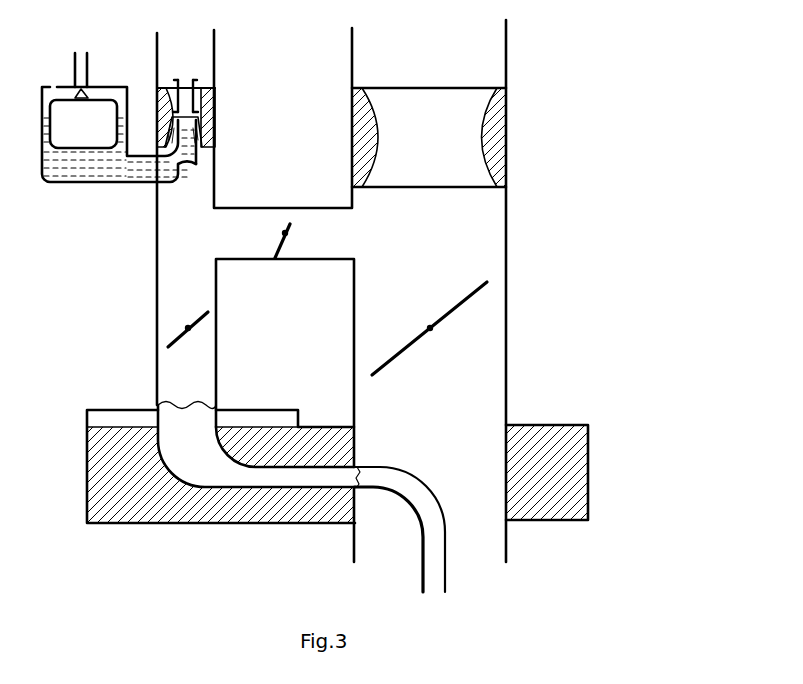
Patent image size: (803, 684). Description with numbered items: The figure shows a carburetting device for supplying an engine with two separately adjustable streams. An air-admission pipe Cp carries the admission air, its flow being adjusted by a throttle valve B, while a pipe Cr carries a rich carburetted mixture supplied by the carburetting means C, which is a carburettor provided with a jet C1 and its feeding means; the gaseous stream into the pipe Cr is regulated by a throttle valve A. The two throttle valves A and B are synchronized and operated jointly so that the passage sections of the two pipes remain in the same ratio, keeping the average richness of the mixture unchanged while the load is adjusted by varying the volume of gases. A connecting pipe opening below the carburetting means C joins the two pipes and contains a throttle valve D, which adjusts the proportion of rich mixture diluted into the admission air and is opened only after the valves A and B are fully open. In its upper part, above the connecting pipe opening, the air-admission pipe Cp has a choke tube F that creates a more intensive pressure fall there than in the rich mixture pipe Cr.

The throttle valve A is at (175, 337).
The throttle valve B is at (465, 308).
The carburetting means C is at (140, 172).
The jet C1 is at (215, 118).
The air-admission pipe Cp is at (452, 457).
The rich carburetted mixture pipe Cr is at (435, 571).
The throttle valve D is at (289, 226).
The choke tube F is at (495, 143).